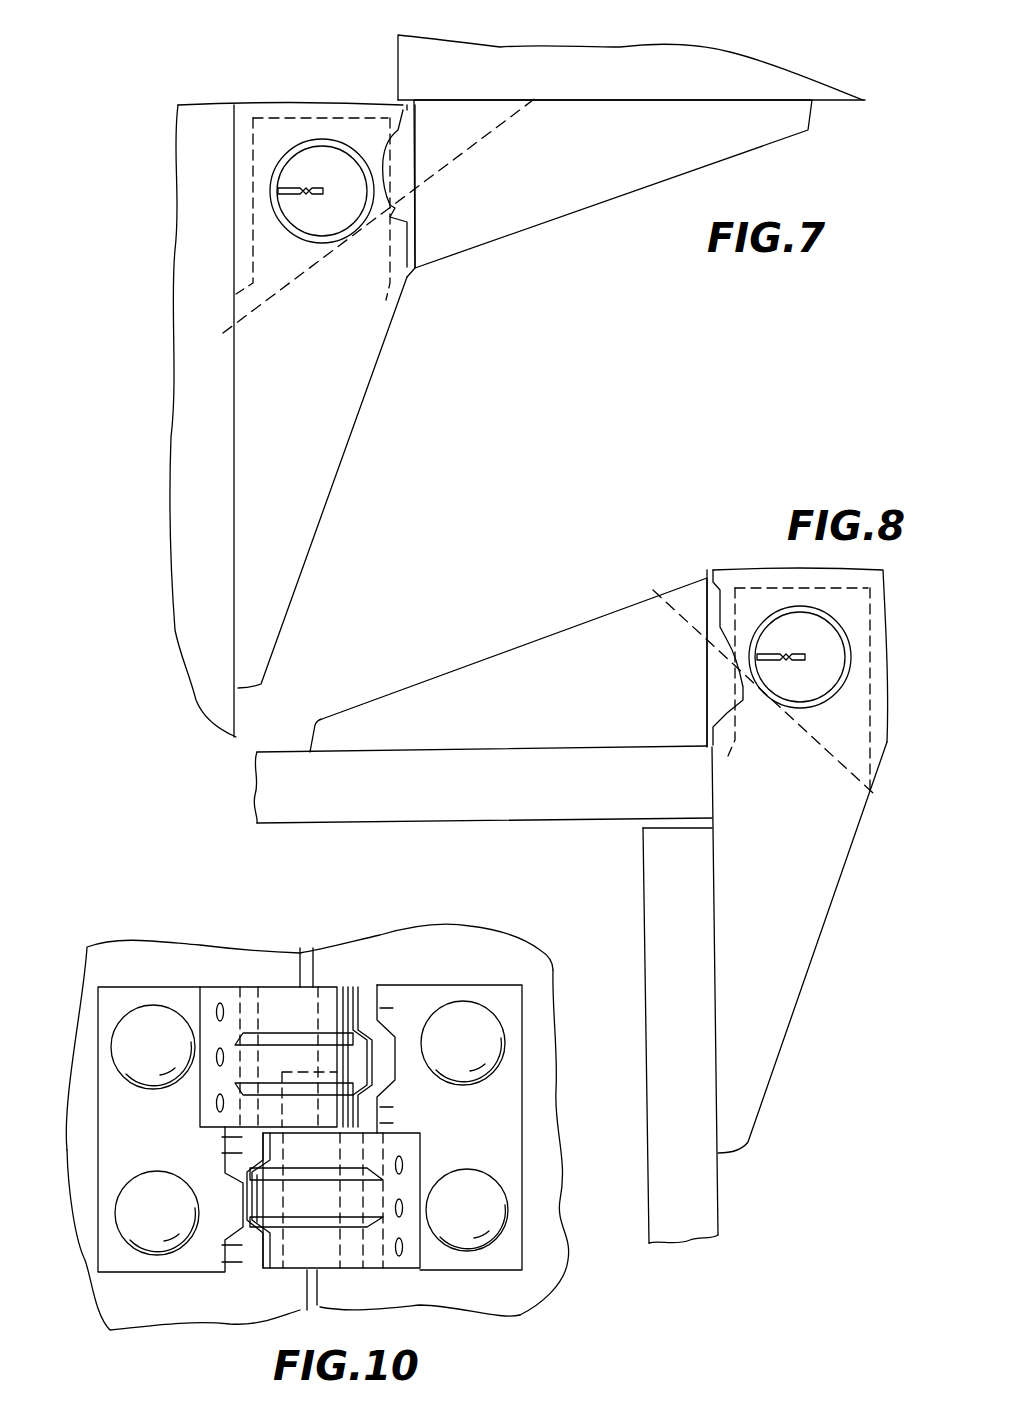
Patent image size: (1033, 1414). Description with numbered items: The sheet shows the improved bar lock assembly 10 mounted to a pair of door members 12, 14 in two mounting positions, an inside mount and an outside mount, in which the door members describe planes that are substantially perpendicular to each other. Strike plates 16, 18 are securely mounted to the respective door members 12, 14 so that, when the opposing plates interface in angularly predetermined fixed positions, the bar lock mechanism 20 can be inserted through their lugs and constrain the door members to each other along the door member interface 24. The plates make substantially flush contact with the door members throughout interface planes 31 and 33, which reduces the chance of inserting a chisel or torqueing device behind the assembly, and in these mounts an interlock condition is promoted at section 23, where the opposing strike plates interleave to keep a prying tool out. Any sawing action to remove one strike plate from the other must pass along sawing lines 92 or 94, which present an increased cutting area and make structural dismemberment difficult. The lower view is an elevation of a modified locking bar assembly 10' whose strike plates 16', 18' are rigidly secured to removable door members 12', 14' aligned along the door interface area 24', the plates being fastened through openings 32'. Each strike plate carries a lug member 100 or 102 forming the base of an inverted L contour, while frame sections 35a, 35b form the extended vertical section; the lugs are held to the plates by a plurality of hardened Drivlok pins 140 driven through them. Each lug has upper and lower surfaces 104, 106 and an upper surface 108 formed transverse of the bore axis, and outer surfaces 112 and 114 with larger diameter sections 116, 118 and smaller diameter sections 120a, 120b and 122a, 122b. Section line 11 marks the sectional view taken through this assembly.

In FIG. 7, the bar lock assembly 10 is at (400, 433).
In FIG. 8, the bar lock assembly 10 is at (871, 877).
In FIG. 7, the door member 12 is at (631, 57).
In FIG. 8, the door member 12 is at (483, 808).
In FIG. 7, the door member 14 is at (264, 420).
In FIG. 8, the door member 14 is at (745, 905).
In FIG. 7, the strike plate 16 is at (613, 184).
In FIG. 8, the strike plate 16 is at (508, 665).
In FIG. 7, the strike plate 18 is at (322, 482).
In FIG. 8, the strike plate 18 is at (802, 947).
In FIG. 7, the bar lock mechanism 20 is at (347, 163).
In FIG. 8, the bar lock mechanism 20 is at (837, 637).
In FIG. 7, the interlock section 23 is at (407, 277).
In FIG. 8, the interlock section 23 is at (712, 748).
In FIG. 7, the door member interface 24 is at (273, 180).
In FIG. 8, the door member interface 24 is at (725, 731).
In FIG. 7, the interface plane 31 is at (561, 100).
In FIG. 8, the interface plane 31 is at (412, 752).
In FIG. 7, the interface plane 33 is at (234, 435).
In FIG. 8, the interface plane 33 is at (717, 1048).
In FIG. 7, the sawing line 92 is at (257, 310).
In FIG. 8, the sawing line 94 is at (822, 752).
In FIG. 10, the door member 12' is at (309, 1105).
In FIG. 10, the door member 14' is at (547, 1115).
In FIG. 10, the strike plate 16' is at (467, 1185).
In FIG. 10, the strike plate 18' is at (178, 1235).
In FIG. 10, the door interface area 24' is at (368, 913).
In FIG. 10, the modified locking bar assembly 10' is at (517, 1292).
In FIG. 10, the section line 11 is at (220, 1163).
In FIG. 10, the openings 32' is at (311, 1128).
In FIG. 10, the frame section 35a is at (553, 988).
In FIG. 10, the frame section 35b is at (113, 1003).
In FIG. 10, the lug member 100 is at (372, 1262).
In FIG. 10, the lug member 102 is at (220, 993).
In FIG. 10, the upper surface 104 is at (403, 1130).
In FIG. 10, the lower surface 106 is at (283, 1263).
In FIG. 10, the upper surface 108 is at (235, 985).
In FIG. 10, the outer surface 112 is at (357, 1147).
In FIG. 10, the outer surface 114 is at (360, 983).
In FIG. 10, the larger diameter section 116 is at (267, 1207).
In FIG. 10, the larger diameter section 118 is at (367, 1057).
In FIG. 10, the smaller diameter section 120a is at (270, 1137).
In FIG. 10, the smaller diameter section 120b is at (288, 1257).
In FIG. 10, the smaller diameter section 122a is at (353, 1013).
In FIG. 10, the smaller diameter section 122b is at (380, 1102).
In FIG. 10, the Drivlok pins 140 is at (215, 1003).